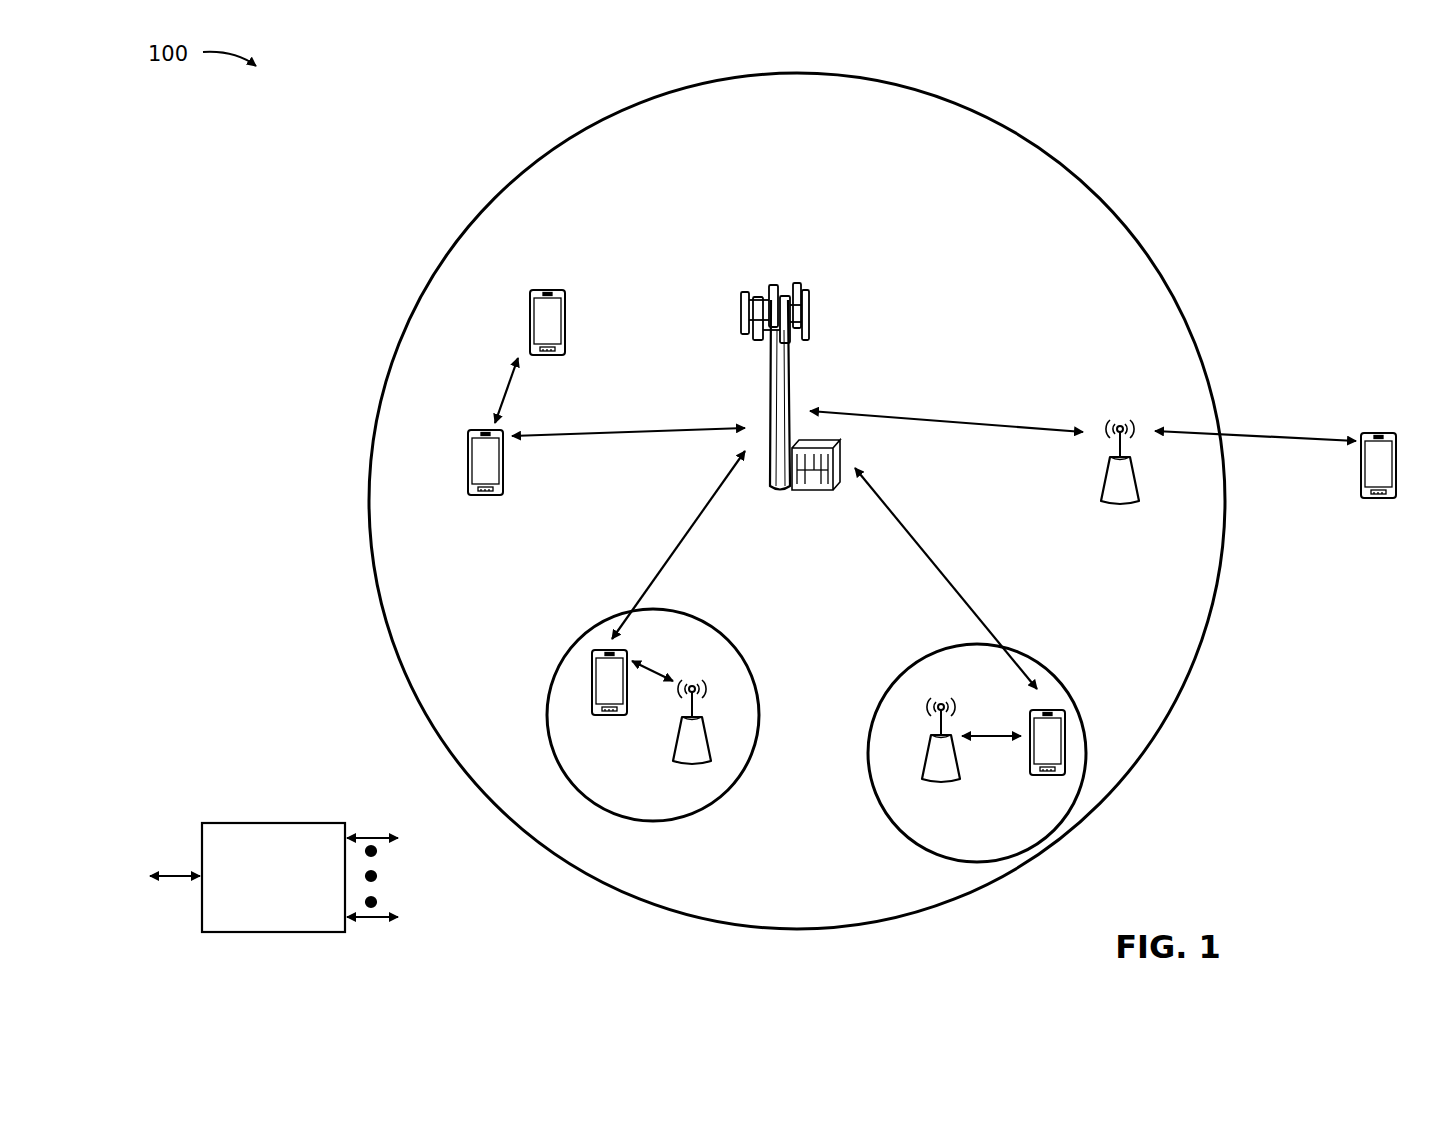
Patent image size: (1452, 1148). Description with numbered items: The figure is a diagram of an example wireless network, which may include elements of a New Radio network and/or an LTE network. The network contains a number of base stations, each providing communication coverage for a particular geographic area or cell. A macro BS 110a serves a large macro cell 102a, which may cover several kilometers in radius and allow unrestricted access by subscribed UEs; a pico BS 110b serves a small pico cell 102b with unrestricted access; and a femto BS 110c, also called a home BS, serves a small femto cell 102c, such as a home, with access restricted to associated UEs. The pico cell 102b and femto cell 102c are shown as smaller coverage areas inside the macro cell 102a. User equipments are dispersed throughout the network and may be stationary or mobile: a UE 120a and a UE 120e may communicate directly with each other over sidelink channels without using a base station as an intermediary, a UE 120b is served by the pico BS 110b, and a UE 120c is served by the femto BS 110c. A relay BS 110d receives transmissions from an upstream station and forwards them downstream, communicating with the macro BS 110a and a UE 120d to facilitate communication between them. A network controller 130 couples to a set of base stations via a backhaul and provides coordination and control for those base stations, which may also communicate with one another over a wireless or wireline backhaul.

The macro cell 102a is at (1083, 178).
The pico cell 102b is at (750, 654).
The femto cell 102c is at (910, 664).
The macro BS 110a is at (789, 278).
The pico BS 110b is at (710, 752).
The femto BS 110c is at (924, 762).
The relay BS 110d is at (1121, 422).
The UE 120a is at (467, 462).
The UE 120b is at (598, 717).
The UE 120c is at (1032, 777).
The UE 120d is at (1392, 432).
The UE 120e is at (528, 305).
The network controller 130 is at (272, 822).